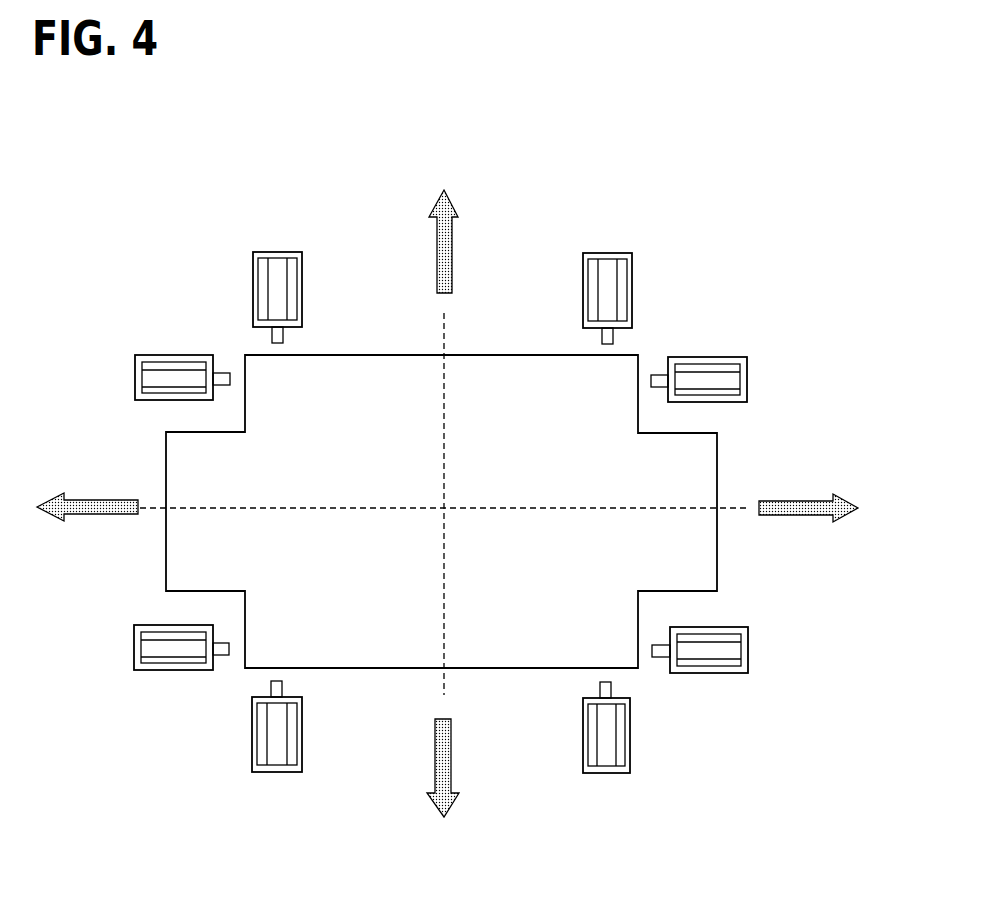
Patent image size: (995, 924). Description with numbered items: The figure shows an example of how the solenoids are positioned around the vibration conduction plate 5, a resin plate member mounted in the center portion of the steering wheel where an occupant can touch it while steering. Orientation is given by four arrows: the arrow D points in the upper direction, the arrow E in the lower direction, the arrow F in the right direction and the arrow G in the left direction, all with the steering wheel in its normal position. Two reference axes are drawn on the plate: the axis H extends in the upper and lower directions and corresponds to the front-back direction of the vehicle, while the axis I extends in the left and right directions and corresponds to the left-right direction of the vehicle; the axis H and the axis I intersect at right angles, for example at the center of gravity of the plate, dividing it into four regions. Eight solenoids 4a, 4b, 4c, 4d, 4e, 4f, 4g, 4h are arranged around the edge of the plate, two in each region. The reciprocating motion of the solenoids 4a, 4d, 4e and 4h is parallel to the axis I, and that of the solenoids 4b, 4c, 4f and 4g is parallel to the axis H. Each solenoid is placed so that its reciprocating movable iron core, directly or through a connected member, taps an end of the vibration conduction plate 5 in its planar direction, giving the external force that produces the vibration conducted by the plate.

The vibration conduction plate 5 is at (517, 355).
The solenoid 4a is at (160, 355).
The solenoid 4b is at (283, 252).
The solenoid 4c is at (615, 253).
The solenoid 4d is at (727, 357).
The solenoid 4e is at (732, 627).
The solenoid 4f is at (610, 773).
The solenoid 4g is at (283, 773).
The solenoid 4h is at (155, 625).
The axis H is at (444, 330).
The axis I is at (725, 508).
The arrow D is at (443, 227).
The arrow E is at (443, 784).
The arrow F is at (818, 508).
The arrow G is at (75, 507).